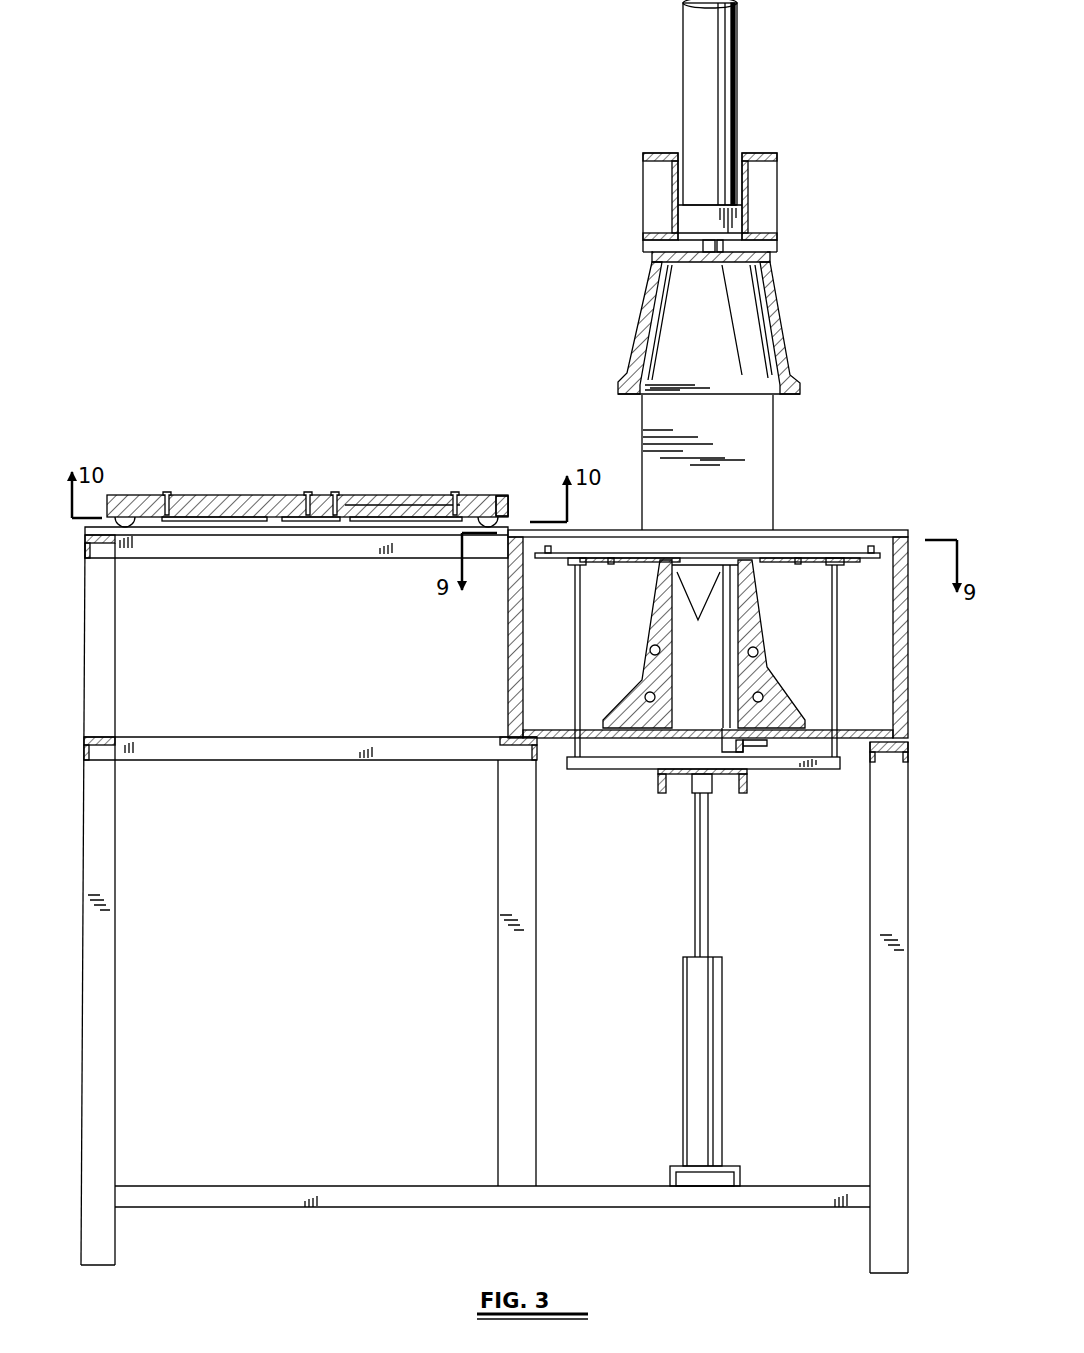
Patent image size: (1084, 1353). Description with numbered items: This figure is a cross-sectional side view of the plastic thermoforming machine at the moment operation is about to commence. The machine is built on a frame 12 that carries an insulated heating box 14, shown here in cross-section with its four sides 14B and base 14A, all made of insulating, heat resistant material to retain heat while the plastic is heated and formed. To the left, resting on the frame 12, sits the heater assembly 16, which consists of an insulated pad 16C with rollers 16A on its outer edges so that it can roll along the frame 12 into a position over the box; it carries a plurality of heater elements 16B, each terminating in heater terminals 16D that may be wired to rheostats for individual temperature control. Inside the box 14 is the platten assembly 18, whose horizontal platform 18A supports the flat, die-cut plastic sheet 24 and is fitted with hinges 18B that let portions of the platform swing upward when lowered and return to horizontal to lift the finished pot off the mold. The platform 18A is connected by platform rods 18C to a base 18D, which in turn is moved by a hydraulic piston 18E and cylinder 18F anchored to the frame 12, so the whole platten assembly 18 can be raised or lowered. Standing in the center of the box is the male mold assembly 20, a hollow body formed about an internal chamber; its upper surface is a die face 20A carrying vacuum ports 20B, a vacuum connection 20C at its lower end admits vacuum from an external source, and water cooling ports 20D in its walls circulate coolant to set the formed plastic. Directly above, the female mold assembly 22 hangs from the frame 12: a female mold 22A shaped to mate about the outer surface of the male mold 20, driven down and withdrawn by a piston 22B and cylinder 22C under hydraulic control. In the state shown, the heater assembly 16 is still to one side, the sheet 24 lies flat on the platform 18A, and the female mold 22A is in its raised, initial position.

The frame 12 is at (757, 153).
The heating box 14 is at (872, 653).
The base 14A is at (858, 733).
The sides 14B is at (515, 635).
The heater assembly 16 is at (242, 495).
The rollers 16A is at (505, 495).
The heater elements 16B is at (205, 517).
The insulated pad 16C is at (390, 500).
The heater terminals 16D is at (165, 492).
The platten assembly 18 is at (660, 811).
The platform 18A is at (627, 555).
The hinges 18B is at (613, 565).
The platform rods 18C is at (575, 677).
The base 18D is at (597, 762).
The piston 18E is at (700, 907).
The cylinder 18F is at (698, 1043).
The male mold assembly 20 is at (707, 661).
The die face 20A is at (687, 558).
The vacuum ports 20B is at (705, 646).
The vacuum connection 20C is at (763, 747).
The water cooling ports 20D is at (645, 695).
The female mold assembly 22 is at (710, 197).
The female mold 22A is at (780, 337).
The piston 22B is at (700, 245).
The cylinder 22C is at (712, 53).
The plastic sheet 24 is at (795, 556).